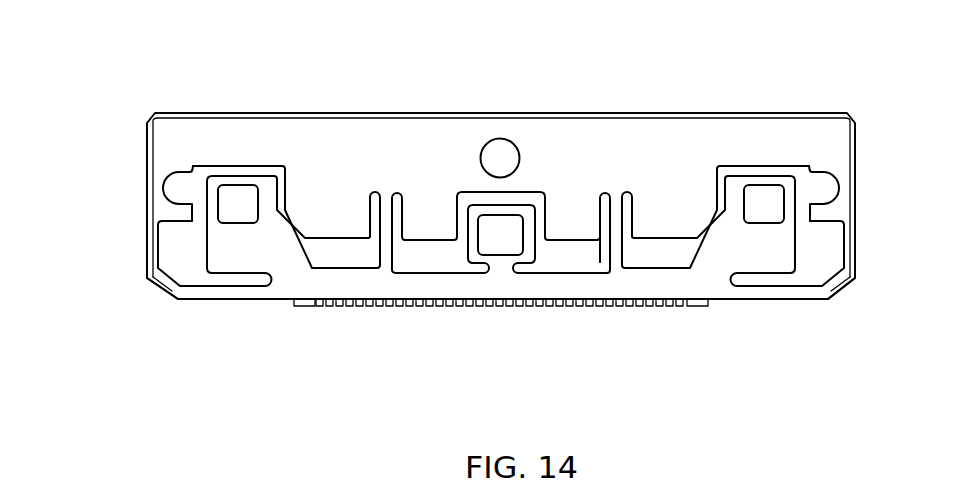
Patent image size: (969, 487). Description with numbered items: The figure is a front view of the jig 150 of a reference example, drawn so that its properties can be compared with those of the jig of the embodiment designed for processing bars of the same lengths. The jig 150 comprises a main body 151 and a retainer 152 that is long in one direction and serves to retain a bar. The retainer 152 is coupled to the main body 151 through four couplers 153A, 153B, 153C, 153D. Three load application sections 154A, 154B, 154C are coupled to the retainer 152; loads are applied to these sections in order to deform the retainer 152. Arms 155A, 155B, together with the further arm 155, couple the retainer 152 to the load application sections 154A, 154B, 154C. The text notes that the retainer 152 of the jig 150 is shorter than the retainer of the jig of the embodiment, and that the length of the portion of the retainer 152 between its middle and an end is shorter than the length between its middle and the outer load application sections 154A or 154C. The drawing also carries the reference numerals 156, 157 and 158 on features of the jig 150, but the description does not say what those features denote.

The jig 150 is at (298, 113).
The main body 151 is at (397, 132).
The retainer 152 is at (288, 283).
The coupler 153A is at (167, 283).
The coupler 153B is at (386, 248).
The coupler 153C is at (616, 250).
The coupler 153D is at (845, 282).
The load application section 154A is at (222, 188).
The load application section 154B is at (520, 228).
The load application section 154C is at (776, 190).
The window opening 155 is at (797, 240).
The arm 155A is at (207, 237).
The arm 155B is at (500, 272).
The circular hole 156 is at (498, 140).
The keyhole slot 157 is at (181, 178).
The terminal row 158 is at (426, 306).